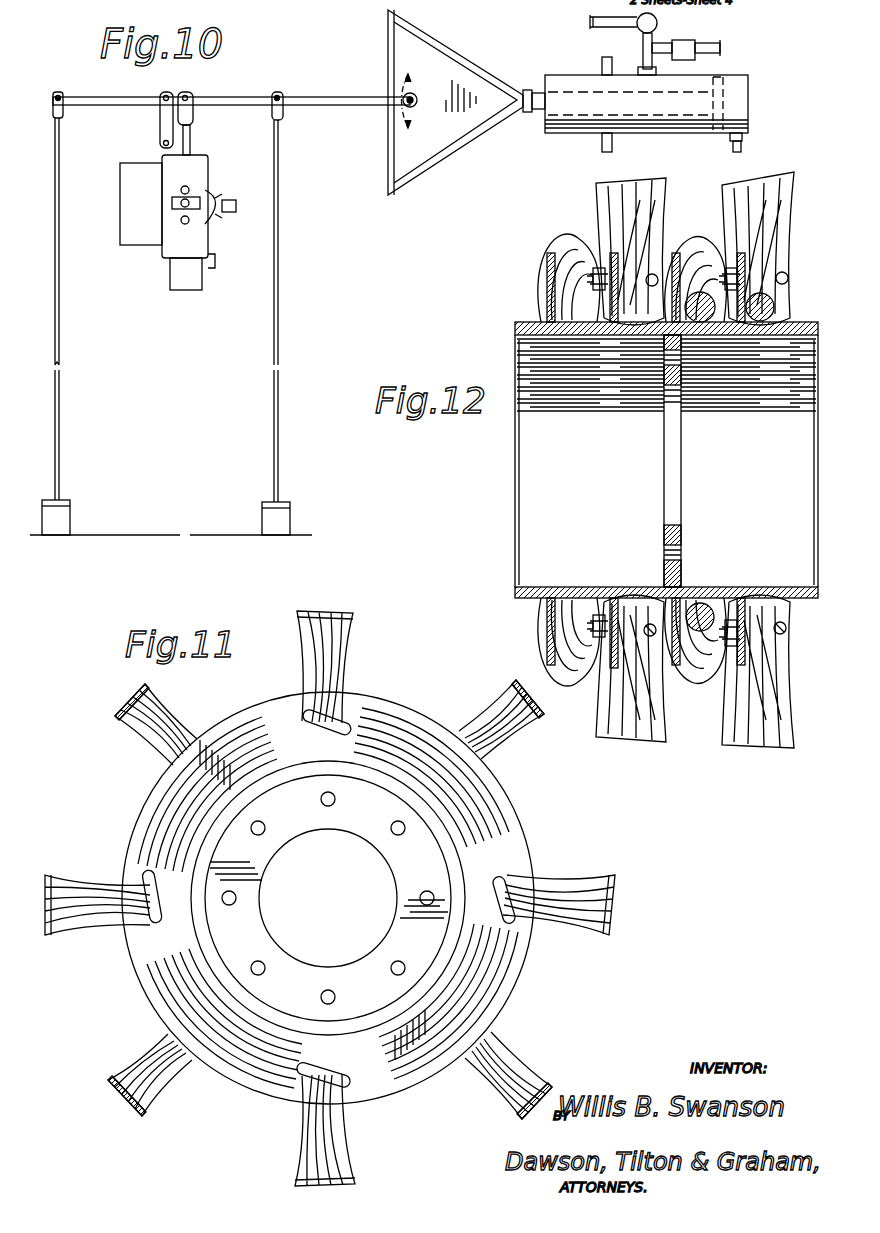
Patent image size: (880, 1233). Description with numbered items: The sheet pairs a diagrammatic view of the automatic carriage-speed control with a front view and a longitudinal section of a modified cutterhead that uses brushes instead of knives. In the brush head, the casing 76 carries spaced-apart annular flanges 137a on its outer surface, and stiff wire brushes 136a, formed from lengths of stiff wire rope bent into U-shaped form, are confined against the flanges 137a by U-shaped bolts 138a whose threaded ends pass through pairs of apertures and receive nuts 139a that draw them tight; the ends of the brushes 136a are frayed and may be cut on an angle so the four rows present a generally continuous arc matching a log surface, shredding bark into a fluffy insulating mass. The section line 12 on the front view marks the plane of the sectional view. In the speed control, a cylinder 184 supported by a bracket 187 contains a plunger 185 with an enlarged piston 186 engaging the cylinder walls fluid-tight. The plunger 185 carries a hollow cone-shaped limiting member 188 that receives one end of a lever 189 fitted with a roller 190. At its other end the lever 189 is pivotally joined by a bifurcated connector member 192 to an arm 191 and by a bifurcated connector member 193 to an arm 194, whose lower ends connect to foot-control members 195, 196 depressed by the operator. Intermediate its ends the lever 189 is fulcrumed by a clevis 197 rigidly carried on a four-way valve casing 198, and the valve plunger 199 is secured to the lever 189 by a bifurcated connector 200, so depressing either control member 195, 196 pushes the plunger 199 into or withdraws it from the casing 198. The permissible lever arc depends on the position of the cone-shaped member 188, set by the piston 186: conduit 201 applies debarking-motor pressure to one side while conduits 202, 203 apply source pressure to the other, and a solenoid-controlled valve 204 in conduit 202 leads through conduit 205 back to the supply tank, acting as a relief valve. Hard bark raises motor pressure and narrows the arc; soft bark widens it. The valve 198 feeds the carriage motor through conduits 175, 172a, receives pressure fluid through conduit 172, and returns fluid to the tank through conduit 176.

In FIG. 11, the section line 12 is at (120, 680).
In FIG. 12, the casing 76 is at (781, 328).
In FIG. 11, the casing 76 is at (440, 972).
In FIG. 12, the stiff wire brushes 136a is at (585, 238).
In FIG. 11, the stiff wire brushes 136a is at (135, 735).
In FIG. 12, the annular flanges 137a is at (547, 292).
In FIG. 11, the annular flanges 137a is at (506, 819).
In FIG. 12, the U-shaped bolts 138a is at (786, 630).
In FIG. 11, the U-shaped bolts 138a is at (148, 872).
In FIG. 12, the nuts 139a is at (600, 291).
In FIG. 10, the conduit 172 is at (170, 204).
In FIG. 10, the conduit 172a is at (189, 222).
In FIG. 10, the conduit 175 is at (189, 189).
In FIG. 10, the conduit 176 is at (228, 208).
In FIG. 10, the cylinder 184 is at (748, 88).
In FIG. 10, the plunger 185 is at (536, 112).
In FIG. 10, the piston 186 is at (723, 77).
In FIG. 10, the bracket 187 is at (600, 144).
In FIG. 10, the cone-shaped limiting member 188 is at (420, 176).
In FIG. 10, the lever 189 is at (360, 97).
In FIG. 10, the roller 190 is at (417, 100).
In FIG. 10, the arm 191 is at (60, 330).
In FIG. 10, the bifurcated connector member 192 is at (63, 108).
In FIG. 10, the bifurcated connector member 193 is at (283, 110).
In FIG. 10, the arm 194 is at (279, 330).
In FIG. 10, the foot-control member 195 is at (62, 513).
In FIG. 10, the foot-control member 196 is at (278, 513).
In FIG. 10, the clevis 197 is at (159, 129).
In FIG. 10, the valve casing 198 is at (208, 171).
In FIG. 10, the valve plunger 199 is at (190, 139).
In FIG. 10, the bifurcated connector 200 is at (193, 115).
In FIG. 10, the conduit 201 is at (742, 147).
In FIG. 10, the conduit 202 is at (643, 46).
In FIG. 10, the conduit 203 is at (706, 44).
In FIG. 10, the solenoid-controlled valve 204 is at (657, 23).
In FIG. 10, the conduit 205 is at (588, 23).